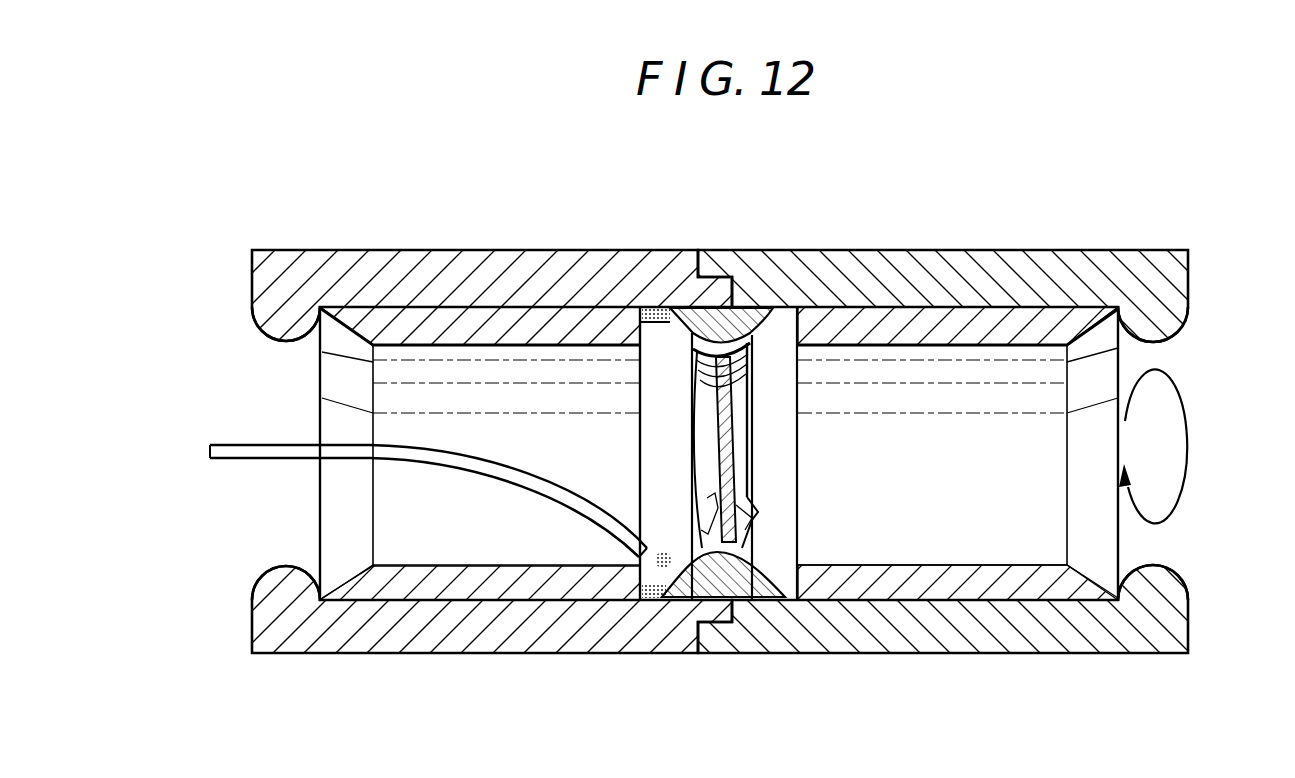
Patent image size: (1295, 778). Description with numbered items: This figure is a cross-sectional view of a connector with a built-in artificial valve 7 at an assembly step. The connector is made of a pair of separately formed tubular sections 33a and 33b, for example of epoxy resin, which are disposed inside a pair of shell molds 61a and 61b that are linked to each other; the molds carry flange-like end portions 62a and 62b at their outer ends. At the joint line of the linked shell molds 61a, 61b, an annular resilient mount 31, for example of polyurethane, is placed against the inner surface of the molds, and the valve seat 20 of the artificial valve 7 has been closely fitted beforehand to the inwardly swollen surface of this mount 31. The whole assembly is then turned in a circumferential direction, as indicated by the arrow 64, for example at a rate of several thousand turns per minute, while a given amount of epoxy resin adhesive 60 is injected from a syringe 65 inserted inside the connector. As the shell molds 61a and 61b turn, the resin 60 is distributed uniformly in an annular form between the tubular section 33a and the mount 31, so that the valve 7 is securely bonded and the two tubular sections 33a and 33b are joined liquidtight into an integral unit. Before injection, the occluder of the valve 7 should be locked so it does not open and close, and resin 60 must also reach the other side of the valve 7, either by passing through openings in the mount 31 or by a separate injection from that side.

The shell mold 61a is at (500, 268).
The shell mold 61b is at (905, 268).
The first annular flange 62a is at (284, 332).
The second annular flange 62b is at (1143, 329).
The tubular section 33a is at (546, 330).
The tubular section 33b is at (935, 332).
The annular resilient mount 31 is at (784, 322).
The valve seat 20 is at (751, 334).
The artificial valve 7 is at (756, 457).
The adhesive (epoxy resin) 60 is at (207, 448).
The syringe 65 is at (411, 443).
The arrow (direction of rotation) 64 is at (1187, 439).